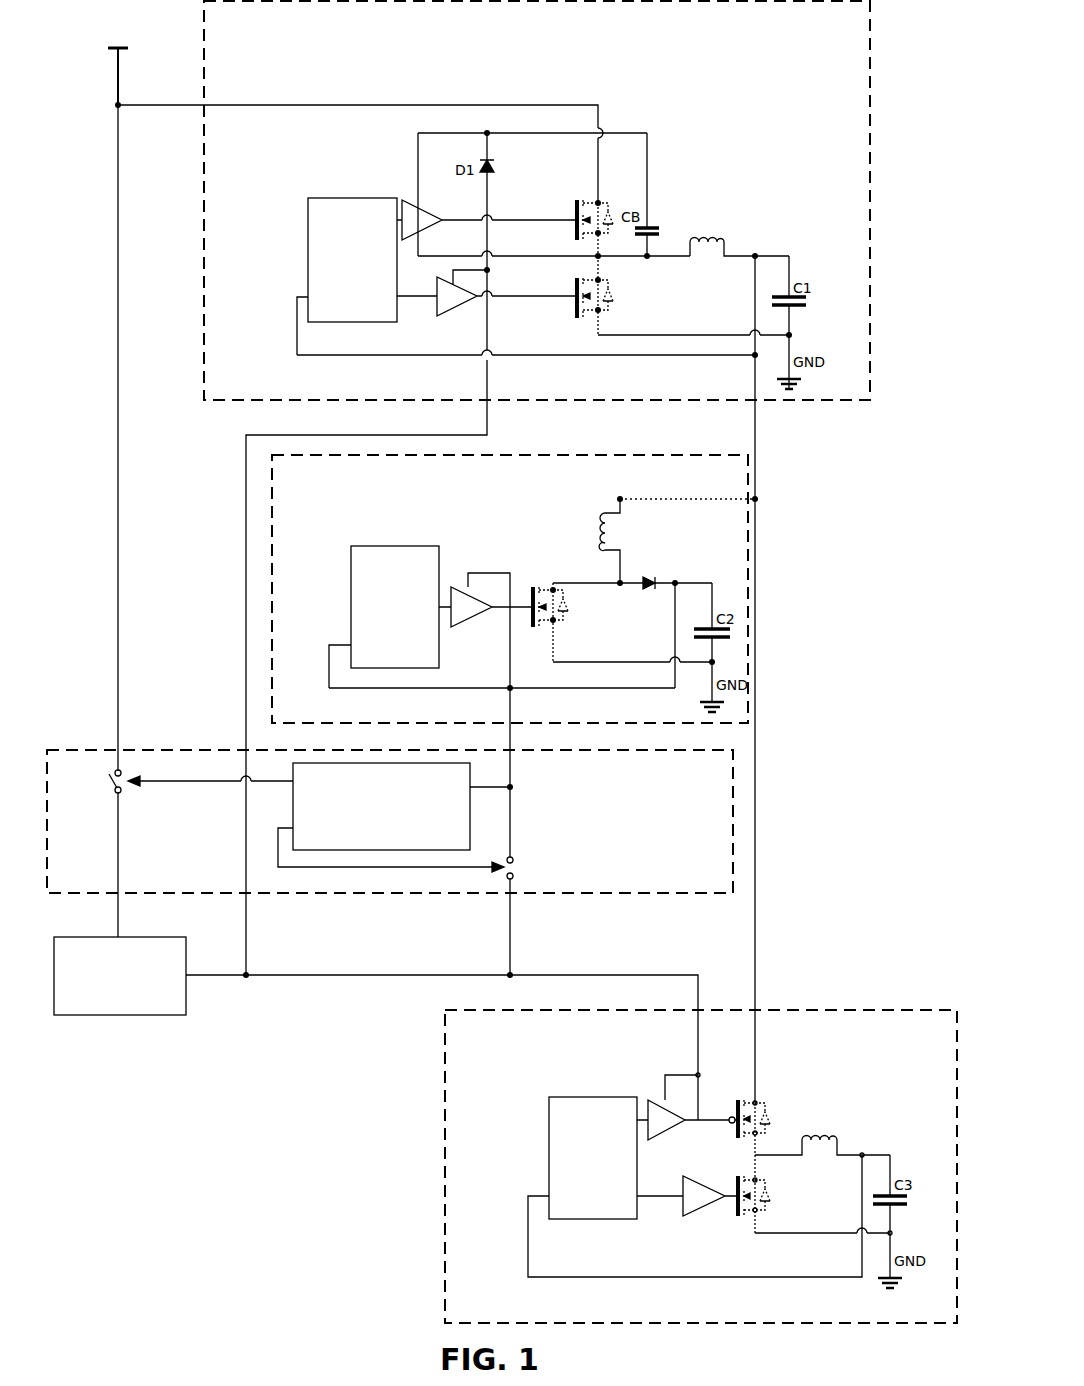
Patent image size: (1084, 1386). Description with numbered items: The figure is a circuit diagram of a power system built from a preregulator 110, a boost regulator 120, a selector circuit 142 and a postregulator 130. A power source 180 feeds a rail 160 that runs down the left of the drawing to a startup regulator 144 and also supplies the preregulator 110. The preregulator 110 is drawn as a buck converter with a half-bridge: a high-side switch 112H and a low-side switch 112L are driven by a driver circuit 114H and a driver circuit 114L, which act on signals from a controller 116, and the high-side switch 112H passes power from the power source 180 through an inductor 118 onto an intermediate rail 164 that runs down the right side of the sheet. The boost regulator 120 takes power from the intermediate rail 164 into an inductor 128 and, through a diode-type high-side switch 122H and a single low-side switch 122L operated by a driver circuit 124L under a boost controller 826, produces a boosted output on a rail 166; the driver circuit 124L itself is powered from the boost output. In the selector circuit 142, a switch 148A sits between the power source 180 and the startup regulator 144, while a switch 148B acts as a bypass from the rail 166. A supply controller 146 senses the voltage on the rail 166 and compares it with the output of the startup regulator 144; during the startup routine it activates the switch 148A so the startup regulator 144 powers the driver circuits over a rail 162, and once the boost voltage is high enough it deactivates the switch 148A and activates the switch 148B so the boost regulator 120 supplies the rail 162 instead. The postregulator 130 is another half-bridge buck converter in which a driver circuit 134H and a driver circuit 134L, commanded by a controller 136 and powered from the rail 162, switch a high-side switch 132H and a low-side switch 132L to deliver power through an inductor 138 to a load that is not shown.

The power source 180 is at (118, 45).
The rail 160 is at (119, 530).
The preregulator 110 is at (537, 200).
The controller 116 is at (352, 260).
The driver circuit 114H is at (406, 200).
The driver circuit 114L is at (458, 308).
The high-side switch 112H is at (575, 213).
The low-side switch 112L is at (612, 283).
The inductor 118 is at (730, 232).
The intermediate rail 164 is at (757, 815).
The boost regulator 120 is at (510, 589).
The boost regulator control 826 is at (395, 607).
The driver circuit 124L is at (478, 622).
The low-side switch 122L is at (560, 622).
The high-side switch 122H is at (648, 575).
The inductor 128 is at (592, 513).
The rail 166 is at (511, 768).
The selector circuit 142 is at (390, 821).
The supply controller 146 is at (381, 806).
The switch 148A is at (177, 781).
The switch 148B is at (417, 853).
The startup regulator 144 is at (120, 976).
The rail 162 is at (551, 975).
The postregulator 130 is at (701, 1166).
The controller 136 is at (593, 1158).
The driver circuit 134H is at (656, 1100).
The driver circuit 134L is at (700, 1210).
The high-side switch 132H is at (766, 1103).
The low-side switch 132L is at (766, 1183).
The inductor 138 is at (840, 1132).